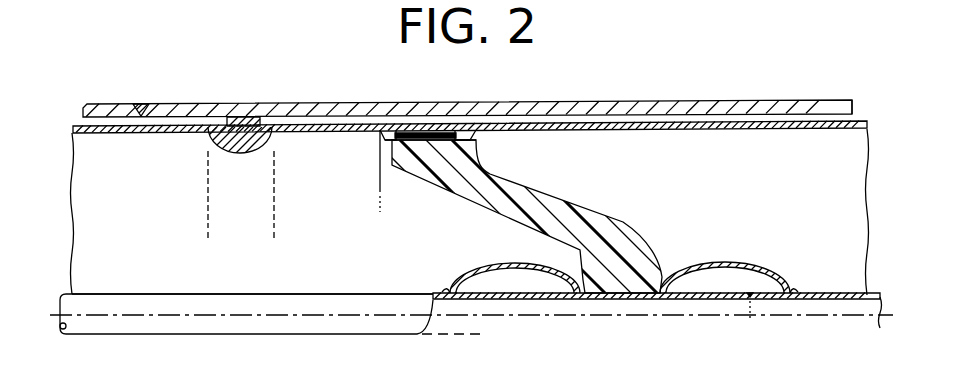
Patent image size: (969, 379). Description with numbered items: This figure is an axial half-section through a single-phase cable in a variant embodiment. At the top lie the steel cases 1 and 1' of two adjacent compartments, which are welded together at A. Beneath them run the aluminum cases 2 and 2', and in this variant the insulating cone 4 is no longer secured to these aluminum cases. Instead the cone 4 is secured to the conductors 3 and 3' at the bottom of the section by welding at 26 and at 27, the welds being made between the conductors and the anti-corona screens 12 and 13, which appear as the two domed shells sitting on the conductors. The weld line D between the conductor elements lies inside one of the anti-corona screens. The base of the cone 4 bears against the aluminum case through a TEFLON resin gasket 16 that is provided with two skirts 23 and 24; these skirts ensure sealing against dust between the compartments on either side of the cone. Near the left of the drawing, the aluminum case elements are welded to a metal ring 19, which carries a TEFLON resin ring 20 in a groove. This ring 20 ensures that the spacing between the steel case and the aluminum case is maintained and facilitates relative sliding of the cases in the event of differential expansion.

The steel case 1 is at (467, 89).
The steel case 1' is at (733, 85).
The weld A is at (142, 103).
The aluminum case 2 is at (469, 207).
The aluminum case 2' is at (796, 212).
The TEFLON resin ring 20 is at (240, 117).
The metal ring 19 is at (239, 152).
The skirt 23 is at (380, 137).
The skirt 24 is at (477, 143).
The insulating cone 4 is at (565, 200).
The TEFLON resin gasket 16 is at (424, 178).
The anti-corona screen 12 is at (497, 264).
The weld 27 is at (456, 290).
The anti-corona screen 13 is at (722, 262).
The weld 26 is at (788, 290).
The conductor 3 is at (471, 327).
The conductor 3' is at (855, 328).
The weld line D is at (750, 320).